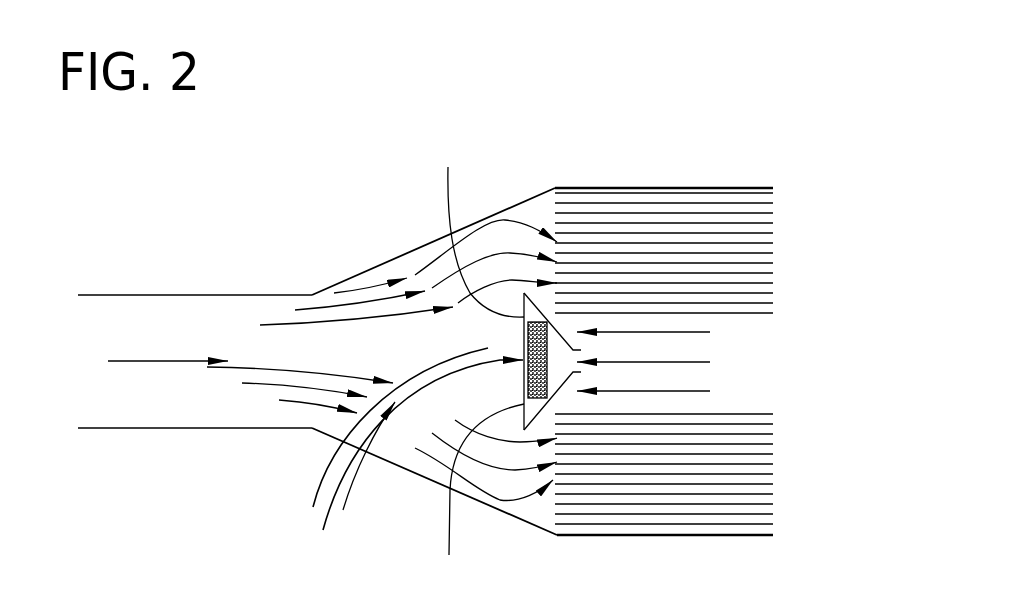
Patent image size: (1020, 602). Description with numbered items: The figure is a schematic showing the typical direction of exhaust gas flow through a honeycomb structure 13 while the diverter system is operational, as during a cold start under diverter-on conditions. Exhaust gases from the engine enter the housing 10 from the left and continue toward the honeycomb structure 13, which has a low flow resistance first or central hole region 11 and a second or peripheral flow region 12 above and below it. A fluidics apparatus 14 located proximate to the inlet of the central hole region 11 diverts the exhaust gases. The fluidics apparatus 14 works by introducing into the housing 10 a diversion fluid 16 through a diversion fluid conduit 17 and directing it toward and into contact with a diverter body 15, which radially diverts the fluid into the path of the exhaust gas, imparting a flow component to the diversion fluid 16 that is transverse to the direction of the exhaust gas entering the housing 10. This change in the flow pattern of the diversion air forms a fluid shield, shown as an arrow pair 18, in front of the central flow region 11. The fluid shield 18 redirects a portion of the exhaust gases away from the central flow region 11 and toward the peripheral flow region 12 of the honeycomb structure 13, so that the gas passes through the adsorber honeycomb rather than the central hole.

The housing 10 is at (380, 247).
The central hole region 11 is at (835, 352).
The peripheral flow region 12 is at (753, 238).
The honeycomb structure 13 is at (639, 188).
The fluidics apparatus 14 is at (295, 483).
The diverter body 15 is at (527, 352).
The diversion fluid 16 is at (328, 518).
The diversion fluid conduit 17 is at (383, 437).
The fluid shield 18 is at (480, 359).